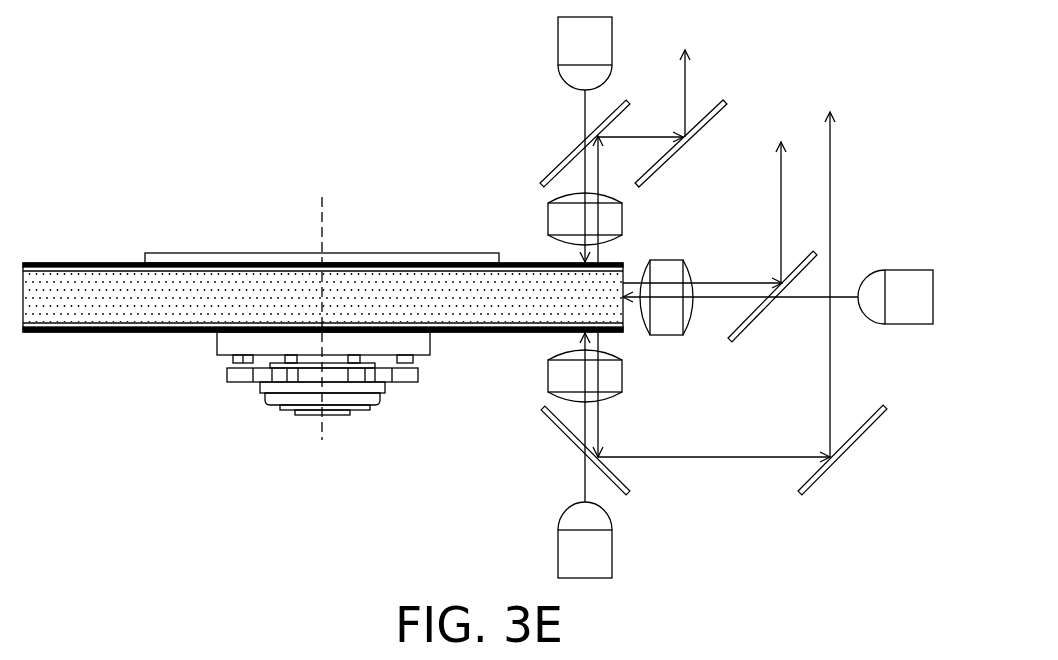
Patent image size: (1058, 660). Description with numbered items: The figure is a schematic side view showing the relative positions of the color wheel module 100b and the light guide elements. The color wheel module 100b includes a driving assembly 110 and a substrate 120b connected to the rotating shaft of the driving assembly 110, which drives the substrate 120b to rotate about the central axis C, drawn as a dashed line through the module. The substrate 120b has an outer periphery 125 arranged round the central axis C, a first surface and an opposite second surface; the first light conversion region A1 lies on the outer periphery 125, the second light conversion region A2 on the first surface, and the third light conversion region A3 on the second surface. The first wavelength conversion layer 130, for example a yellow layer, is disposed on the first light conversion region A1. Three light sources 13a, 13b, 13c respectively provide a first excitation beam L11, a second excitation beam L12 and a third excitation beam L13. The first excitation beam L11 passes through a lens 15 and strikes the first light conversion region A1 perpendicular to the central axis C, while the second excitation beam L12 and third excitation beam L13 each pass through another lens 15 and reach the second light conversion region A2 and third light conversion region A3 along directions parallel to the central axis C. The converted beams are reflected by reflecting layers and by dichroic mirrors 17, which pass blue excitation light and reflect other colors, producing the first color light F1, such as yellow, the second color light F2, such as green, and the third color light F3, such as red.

The color wheel module 100b is at (131, 204).
The driving assembly 110 is at (418, 343).
The substrate 120b is at (88, 333).
The outer periphery 125 is at (207, 306).
The first wavelength conversion layer 130 is at (163, 296).
The lens 15 is at (556, 219).
The mirror 17 is at (620, 100).
The light source 13a is at (905, 324).
The light source 13b is at (568, 43).
The light source 13c is at (608, 557).
The first excitation beam L11 is at (800, 300).
The second excitation beam L12 is at (585, 114).
The third excitation beam L13 is at (585, 473).
The first color light F1 is at (783, 194).
The second color light F2 is at (693, 75).
The third color light F3 is at (832, 268).
The first light conversion region A1 is at (469, 306).
The second light conversion region A2 is at (527, 251).
The third light conversion region A3 is at (519, 340).
The central axis C is at (322, 300).